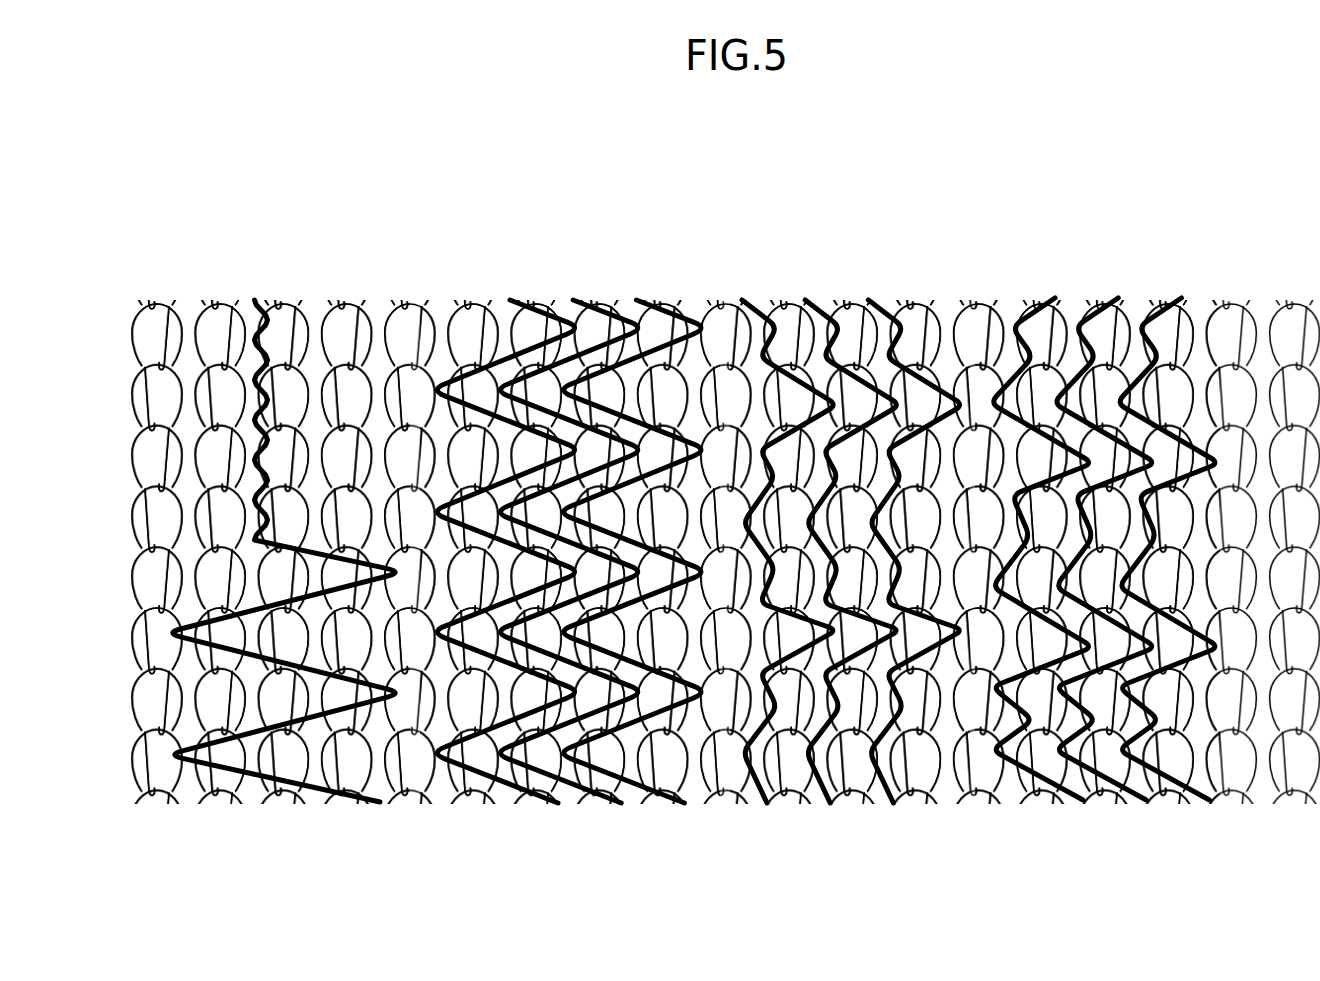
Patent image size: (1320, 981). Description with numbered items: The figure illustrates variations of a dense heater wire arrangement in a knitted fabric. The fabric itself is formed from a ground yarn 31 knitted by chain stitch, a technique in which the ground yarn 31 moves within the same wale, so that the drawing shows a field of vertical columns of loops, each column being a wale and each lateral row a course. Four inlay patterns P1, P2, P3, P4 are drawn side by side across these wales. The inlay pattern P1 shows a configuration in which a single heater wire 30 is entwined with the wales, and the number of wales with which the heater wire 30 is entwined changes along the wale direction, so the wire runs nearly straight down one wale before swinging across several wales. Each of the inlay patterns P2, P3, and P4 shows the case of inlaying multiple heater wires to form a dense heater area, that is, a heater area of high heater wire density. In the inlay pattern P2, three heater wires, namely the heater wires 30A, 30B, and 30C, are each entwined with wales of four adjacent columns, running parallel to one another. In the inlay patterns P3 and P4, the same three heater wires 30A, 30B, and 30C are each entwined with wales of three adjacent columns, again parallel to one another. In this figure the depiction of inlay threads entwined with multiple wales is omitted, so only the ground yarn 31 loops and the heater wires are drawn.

The heater wire 30 is at (268, 306).
The ground yarn 31 is at (385, 306).
The heater wire 30A is at (566, 306).
The heater wire 30B is at (629, 306).
The heater wire 30C is at (691, 306).
The inlay pattern P1 is at (326, 208).
The inlay pattern P2 is at (634, 208).
The inlay pattern P3 is at (834, 208).
The inlay pattern P4 is at (1083, 208).